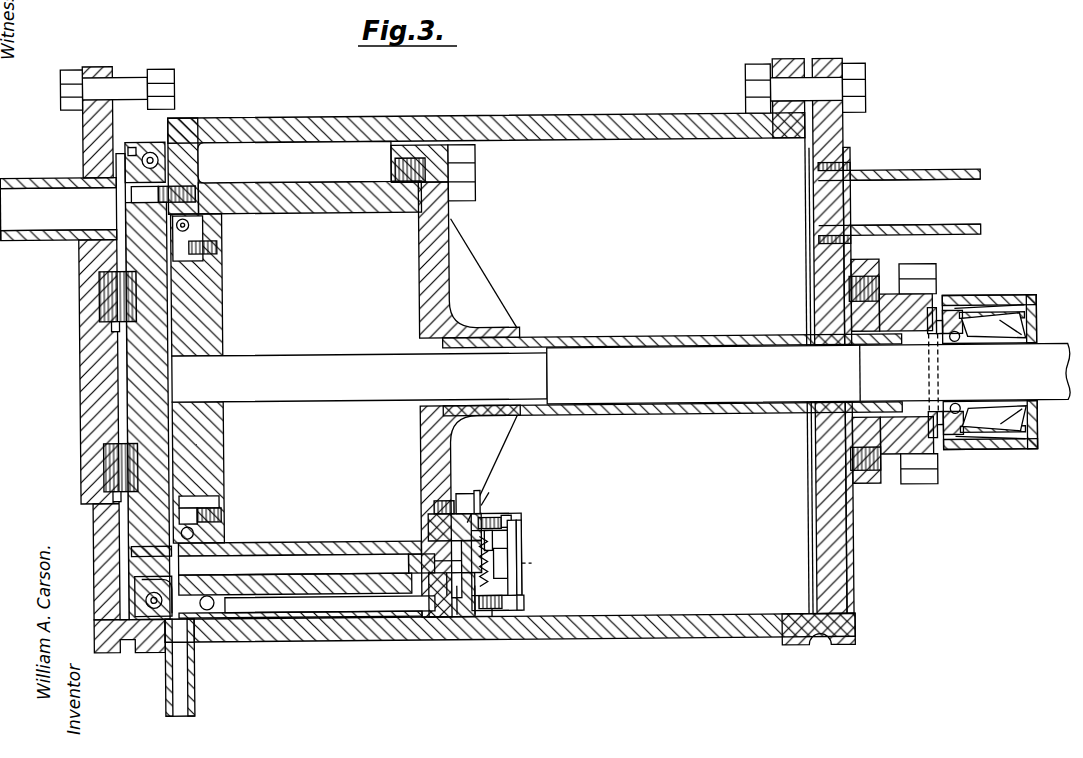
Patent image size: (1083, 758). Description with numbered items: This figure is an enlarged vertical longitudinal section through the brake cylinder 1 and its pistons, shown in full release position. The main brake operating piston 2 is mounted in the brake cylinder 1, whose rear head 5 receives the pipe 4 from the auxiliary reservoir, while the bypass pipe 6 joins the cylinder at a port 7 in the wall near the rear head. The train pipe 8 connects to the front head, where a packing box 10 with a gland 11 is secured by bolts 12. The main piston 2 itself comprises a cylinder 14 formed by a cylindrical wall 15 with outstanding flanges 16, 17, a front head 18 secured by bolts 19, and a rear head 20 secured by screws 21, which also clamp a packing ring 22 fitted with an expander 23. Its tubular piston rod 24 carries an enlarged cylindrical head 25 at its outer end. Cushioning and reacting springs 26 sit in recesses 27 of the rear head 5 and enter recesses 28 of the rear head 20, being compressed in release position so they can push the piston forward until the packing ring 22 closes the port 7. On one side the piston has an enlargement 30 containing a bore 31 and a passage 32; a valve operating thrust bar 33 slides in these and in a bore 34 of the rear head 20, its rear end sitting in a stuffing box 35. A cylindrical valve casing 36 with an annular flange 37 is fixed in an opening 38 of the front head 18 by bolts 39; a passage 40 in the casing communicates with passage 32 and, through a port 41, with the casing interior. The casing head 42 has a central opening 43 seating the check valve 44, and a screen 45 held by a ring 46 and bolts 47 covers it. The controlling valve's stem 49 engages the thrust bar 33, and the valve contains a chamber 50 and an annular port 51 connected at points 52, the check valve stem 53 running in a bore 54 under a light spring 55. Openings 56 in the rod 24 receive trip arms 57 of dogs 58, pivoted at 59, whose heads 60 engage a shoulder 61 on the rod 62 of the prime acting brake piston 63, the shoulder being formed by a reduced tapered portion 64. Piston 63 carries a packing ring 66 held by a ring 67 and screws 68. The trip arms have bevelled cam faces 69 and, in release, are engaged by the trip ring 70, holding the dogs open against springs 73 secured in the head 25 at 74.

The brake cylinder 1 is at (520, 125).
The main brake operating piston 2 is at (268, 191).
The pipe 4 is at (30, 178).
The rear head 5 is at (85, 366).
The bypass pipe 6 is at (176, 685).
The port 7 is at (188, 642).
The train pipe 8 is at (928, 175).
The packing box 10 is at (866, 278).
The gland 11 is at (922, 296).
The bolts 12 is at (916, 270).
The cylinder 14 is at (322, 377).
The cylindrical wall 15 is at (327, 184).
The outstanding flange 16 is at (400, 150).
The outstanding flange 17 is at (197, 148).
The front head 18 is at (420, 438).
The bolts 19 is at (462, 148).
The rear head 20 is at (124, 396).
The screws 21 is at (140, 189).
The packing ring 22 is at (160, 147).
The expander 23 is at (133, 148).
The piston rod 24 is at (665, 337).
The enlarged cylindrical head 25 is at (1000, 303).
The cushioning and reacting springs 26 is at (100, 283).
The recesses 27 is at (105, 447).
The recesses 28 is at (116, 325).
The enlargement 30 is at (273, 580).
The bore 31 is at (283, 548).
The passage 32 is at (313, 600).
The valve operating thrust bar 33 is at (317, 562).
The bore 34 is at (140, 548).
The stuffing box 35 is at (140, 590).
The cylindrical valve casing 36 is at (437, 527).
The annular flange 37 is at (466, 492).
The opening 38 is at (433, 506).
The bolts 39 is at (492, 496).
The passage 40 is at (470, 600).
The port 41 is at (467, 614).
The head 42 is at (515, 533).
The central opening 43 is at (515, 556).
The check valve 44 is at (515, 575).
The screen 45 is at (519, 542).
The ring 46 is at (518, 595).
The bolts 47 is at (505, 521).
The stem 49 is at (445, 565).
The chamber 50 is at (503, 516).
The port 51 is at (490, 614).
The points of communication 52 is at (505, 614).
The stem 53 is at (456, 598).
The bore 54 is at (452, 572).
The light spring 55 is at (530, 563).
The openings 56 is at (933, 312).
The trip arms 57 is at (930, 342).
The dogs 58 is at (1020, 325).
The pivot 59 is at (956, 407).
The heads 60 is at (1022, 338).
The shoulder 61 is at (855, 352).
The rod 62 is at (621, 375).
The prime acting brake piston 63 is at (210, 325).
The reduced tapered portion 64 is at (812, 425).
The packing ring 66 is at (205, 509).
The ring 67 is at (205, 496).
The screws 68 is at (216, 262).
The cam faces 69 is at (939, 442).
The trip ring 70 is at (955, 315).
The springs 73 is at (1027, 307).
The securing point 74 is at (985, 306).